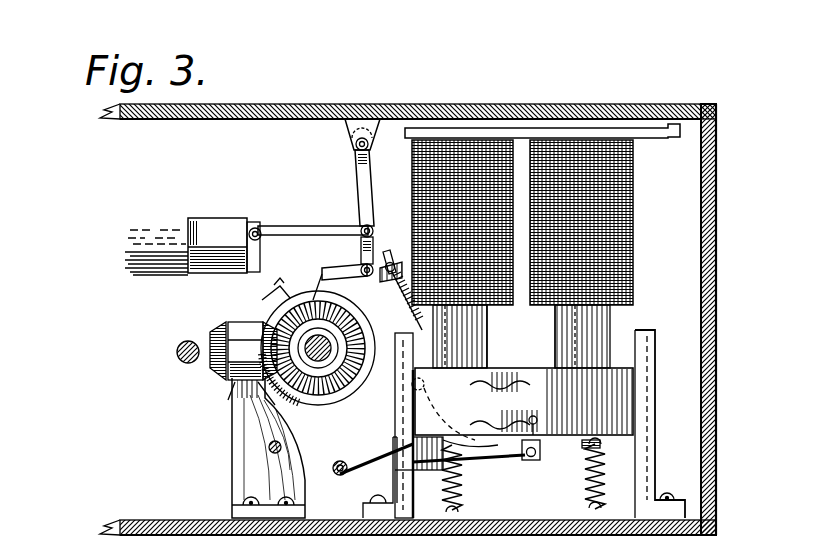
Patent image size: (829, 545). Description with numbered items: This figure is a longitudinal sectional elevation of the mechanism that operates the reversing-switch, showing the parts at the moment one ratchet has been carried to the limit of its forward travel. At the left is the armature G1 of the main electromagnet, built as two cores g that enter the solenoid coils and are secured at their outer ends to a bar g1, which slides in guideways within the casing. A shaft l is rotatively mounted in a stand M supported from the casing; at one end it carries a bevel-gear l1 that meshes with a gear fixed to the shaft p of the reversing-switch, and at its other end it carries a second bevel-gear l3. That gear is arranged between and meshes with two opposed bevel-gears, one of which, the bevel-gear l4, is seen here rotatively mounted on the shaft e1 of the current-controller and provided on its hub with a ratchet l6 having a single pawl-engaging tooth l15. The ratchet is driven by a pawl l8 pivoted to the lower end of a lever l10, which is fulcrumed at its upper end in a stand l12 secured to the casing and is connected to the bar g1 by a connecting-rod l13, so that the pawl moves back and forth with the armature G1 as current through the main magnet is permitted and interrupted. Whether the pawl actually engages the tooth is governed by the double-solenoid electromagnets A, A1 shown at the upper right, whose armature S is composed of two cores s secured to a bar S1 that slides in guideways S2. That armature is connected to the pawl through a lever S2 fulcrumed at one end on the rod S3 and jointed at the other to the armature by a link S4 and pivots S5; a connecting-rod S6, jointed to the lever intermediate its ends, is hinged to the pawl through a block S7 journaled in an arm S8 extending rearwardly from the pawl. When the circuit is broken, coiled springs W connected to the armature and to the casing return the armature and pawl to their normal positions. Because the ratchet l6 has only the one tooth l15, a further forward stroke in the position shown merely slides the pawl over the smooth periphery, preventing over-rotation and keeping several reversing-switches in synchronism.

The electromagnet coil A is at (462, 254).
The electromagnet coil A1 is at (633, 212).
The armature S is at (524, 387).
The cores s is at (487, 333).
The bar S1 is at (580, 460).
The lever S2 is at (640, 440).
The rod S3 is at (336, 463).
The link S4 is at (540, 448).
The pivots S5 is at (538, 470).
The connecting-rod S6 is at (418, 332).
The block S7 is at (387, 272).
The arm S8 is at (396, 254).
The coiled springs W is at (527, 475).
The stand M is at (240, 447).
The shaft of the reversing-switch p is at (177, 352).
The shaft l is at (230, 384).
The bevel-gear l1 is at (218, 332).
The second bevel-gear l3 is at (248, 330).
The bevel-gear l4 is at (318, 300).
The ratchet l6 is at (355, 402).
The pawl l8 is at (335, 268).
The lever l10 is at (372, 186).
The stand l12 is at (350, 138).
The connecting-rod l13 is at (310, 226).
The pawl-engaging tooth l15 is at (280, 284).
The shaft of the current-controller e1 is at (314, 352).
The cores g is at (160, 224).
The armature G1 is at (222, 206).
The bar g1 is at (255, 222).